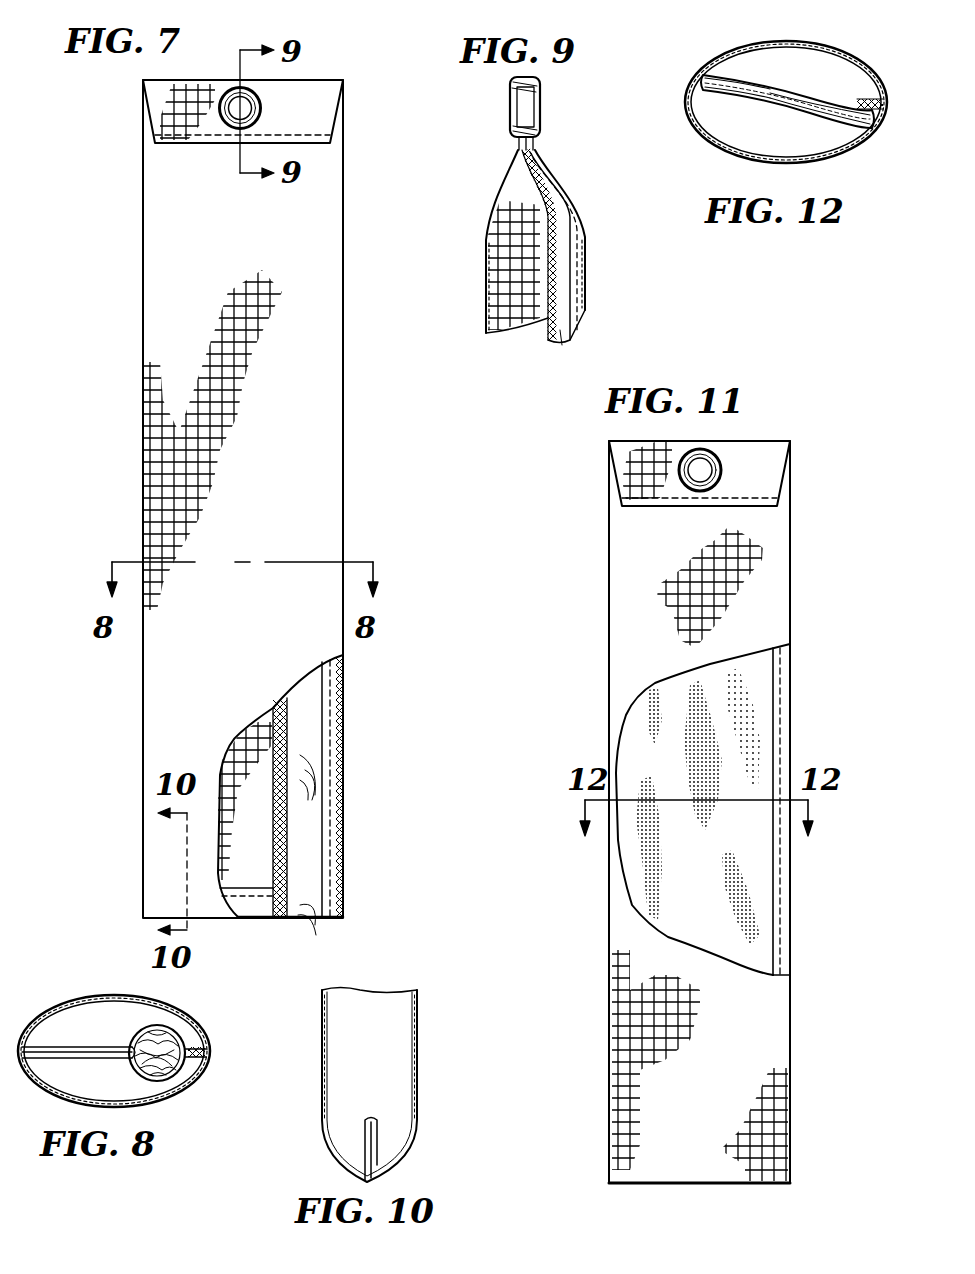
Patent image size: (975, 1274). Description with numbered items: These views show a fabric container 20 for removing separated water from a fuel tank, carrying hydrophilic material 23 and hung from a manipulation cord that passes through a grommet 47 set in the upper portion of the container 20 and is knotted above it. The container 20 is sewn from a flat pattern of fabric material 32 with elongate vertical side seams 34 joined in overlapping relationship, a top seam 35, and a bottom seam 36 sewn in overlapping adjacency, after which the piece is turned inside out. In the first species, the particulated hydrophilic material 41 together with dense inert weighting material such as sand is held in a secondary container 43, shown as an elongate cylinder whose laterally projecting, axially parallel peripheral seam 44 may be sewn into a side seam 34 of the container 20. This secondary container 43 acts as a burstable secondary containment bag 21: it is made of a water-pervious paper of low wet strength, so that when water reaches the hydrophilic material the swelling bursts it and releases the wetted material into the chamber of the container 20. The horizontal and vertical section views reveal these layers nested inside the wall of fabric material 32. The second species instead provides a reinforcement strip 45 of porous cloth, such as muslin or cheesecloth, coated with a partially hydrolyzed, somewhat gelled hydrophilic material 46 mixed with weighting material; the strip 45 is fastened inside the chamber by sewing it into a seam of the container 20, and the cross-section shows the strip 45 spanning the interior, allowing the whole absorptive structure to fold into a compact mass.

In FIG. 7, the container 20 is at (143, 256).
In FIG. 8, the container 20 is at (90, 1000).
In FIG. 10, the container 20 is at (418, 1038).
In FIG. 9, the container 20 is at (582, 222).
In FIG. 12, the container 20 is at (808, 41).
In FIG. 11, the container 20 is at (699, 812).
In FIG. 7, the burstable secondary containment bag 21 is at (300, 733).
In FIG. 8, the burstable secondary containment bag 21 is at (133, 1043).
In FIG. 8, the hydrophilic material 23 is at (178, 1032).
In FIG. 12, the hydrophilic material 23 is at (803, 90).
In FIG. 11, the hydrophilic material 23 is at (735, 755).
In FIG. 7, the fabric material 32 is at (308, 389).
In FIG. 8, the fabric material 32 is at (183, 1090).
In FIG. 10, the fabric material 32 is at (416, 1085).
In FIG. 9, the fabric material 32 is at (508, 198).
In FIG. 12, the fabric material 32 is at (716, 146).
In FIG. 11, the fabric material 32 is at (700, 988).
In FIG. 7, the side seam 34 is at (330, 855).
In FIG. 8, the side seam 34 is at (205, 1048).
In FIG. 9, the side seam 34 is at (578, 256).
In FIG. 12, the side seam 34 is at (880, 100).
In FIG. 11, the side seam 34 is at (778, 896).
In FIG. 7, the top seam 35 is at (315, 135).
In FIG. 11, the top seam 35 is at (722, 503).
In FIG. 7, the bottom seam 36 is at (256, 900).
In FIG. 8, the bottom seam 36 is at (88, 1050).
In FIG. 10, the bottom seam 36 is at (374, 1124).
In FIG. 8, the particulated hydrophilic material 41 is at (142, 1058).
In FIG. 7, the secondary container 43 is at (312, 790).
In FIG. 8, the secondary container 43 is at (152, 1030).
In FIG. 9, the secondary container 43 is at (548, 340).
In FIG. 8, the peripheral seam 44 is at (206, 1056).
In FIG. 9, the peripheral seam 44 is at (572, 325).
In FIG. 12, the reinforcement strip 45 is at (772, 98).
In FIG. 12, the hydrophilic material 46 is at (797, 106).
In FIG. 11, the hydrophilic material 46 is at (720, 710).
In FIG. 7, the grommet 47 is at (258, 112).
In FIG. 9, the grommet 47 is at (530, 112).
In FIG. 11, the grommet 47 is at (718, 465).